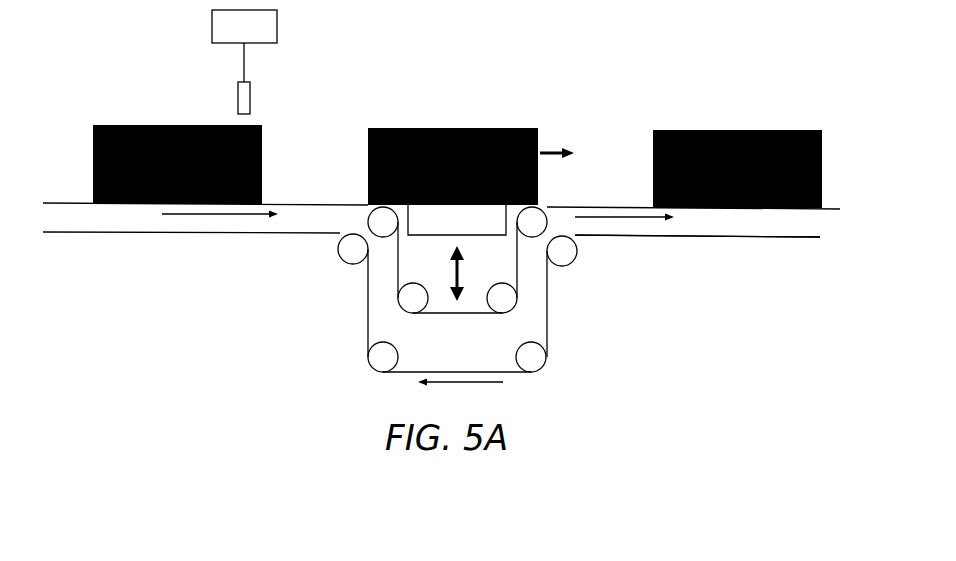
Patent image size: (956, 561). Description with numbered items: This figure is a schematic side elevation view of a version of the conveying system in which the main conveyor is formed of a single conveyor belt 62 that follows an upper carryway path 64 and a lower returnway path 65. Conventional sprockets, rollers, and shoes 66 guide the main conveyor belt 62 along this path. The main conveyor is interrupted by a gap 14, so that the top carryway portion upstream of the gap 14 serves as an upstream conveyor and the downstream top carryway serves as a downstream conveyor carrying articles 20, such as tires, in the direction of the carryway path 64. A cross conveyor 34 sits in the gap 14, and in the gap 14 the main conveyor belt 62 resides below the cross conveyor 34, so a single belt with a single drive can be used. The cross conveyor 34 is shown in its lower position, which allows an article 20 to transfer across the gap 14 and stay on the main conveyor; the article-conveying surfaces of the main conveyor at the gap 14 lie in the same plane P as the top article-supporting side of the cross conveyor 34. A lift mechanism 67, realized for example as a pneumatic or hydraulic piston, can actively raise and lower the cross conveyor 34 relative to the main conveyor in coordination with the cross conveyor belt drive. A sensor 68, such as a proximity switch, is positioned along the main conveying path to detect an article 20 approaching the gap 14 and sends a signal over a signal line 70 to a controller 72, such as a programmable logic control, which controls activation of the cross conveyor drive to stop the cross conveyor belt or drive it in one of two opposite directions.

The controller 72 is at (278, 27).
The signal line 70 is at (244, 66).
The sensor 68 is at (250, 101).
The article 20 is at (493, 128).
The plane P is at (327, 205).
The gap 14 is at (505, 253).
The sprockets, rollers, and shoes 66 is at (381, 231).
The cross conveyor 34 is at (462, 230).
The lift mechanism 67 is at (452, 268).
The upper carryway path 64 is at (205, 218).
The lower returnway path 65 is at (470, 383).
The conveyor belt 62 is at (727, 237).